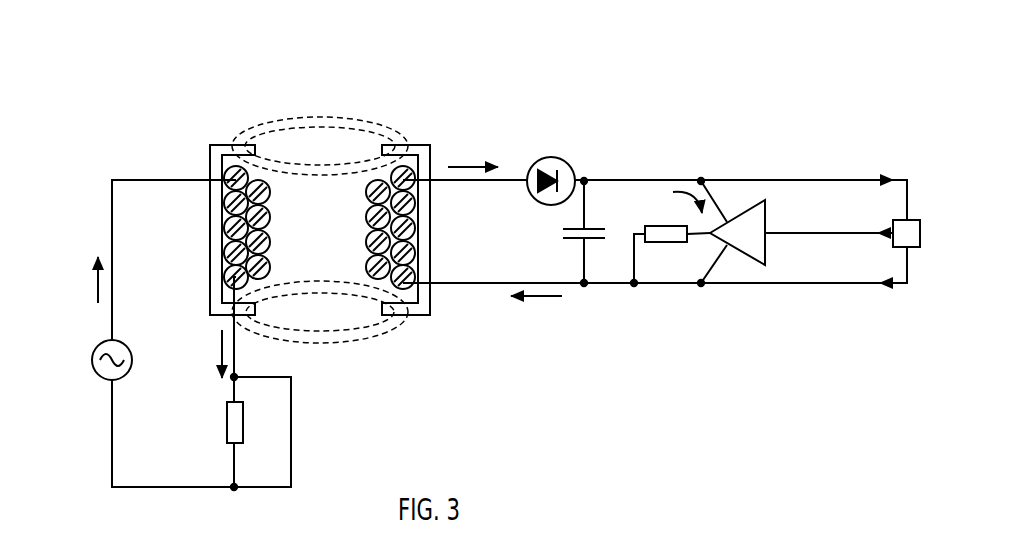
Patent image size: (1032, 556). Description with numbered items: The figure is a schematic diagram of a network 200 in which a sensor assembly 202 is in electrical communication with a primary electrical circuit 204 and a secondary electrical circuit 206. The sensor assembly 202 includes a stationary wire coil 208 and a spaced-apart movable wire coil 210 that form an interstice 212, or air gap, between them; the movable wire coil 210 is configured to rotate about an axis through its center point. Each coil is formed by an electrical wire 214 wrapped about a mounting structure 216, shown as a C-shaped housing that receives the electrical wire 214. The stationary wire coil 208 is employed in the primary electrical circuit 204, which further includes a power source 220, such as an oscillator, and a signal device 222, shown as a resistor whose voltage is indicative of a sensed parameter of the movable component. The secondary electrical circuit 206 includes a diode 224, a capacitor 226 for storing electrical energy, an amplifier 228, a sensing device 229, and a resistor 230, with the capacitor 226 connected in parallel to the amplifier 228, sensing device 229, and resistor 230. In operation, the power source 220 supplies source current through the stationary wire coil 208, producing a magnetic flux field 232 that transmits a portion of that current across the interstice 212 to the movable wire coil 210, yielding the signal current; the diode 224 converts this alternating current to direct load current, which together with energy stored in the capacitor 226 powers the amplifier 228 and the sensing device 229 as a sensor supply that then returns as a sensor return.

The network 200 is at (63, 58).
The sensor assembly 202 is at (427, 86).
The primary electrical circuit 204 is at (96, 166).
The secondary electrical circuit 206 is at (685, 127).
The stationary wire coil 208 is at (208, 163).
The movable wire coil 210 is at (432, 158).
The interstice 212 is at (378, 119).
The electrical wire 214 is at (270, 212).
The mounting structure 216 is at (210, 213).
The power source 220 is at (97, 375).
The signal device 222 is at (225, 412).
The diode 224 is at (569, 165).
The capacitor 226 is at (597, 229).
The amplifier 228 is at (743, 262).
The sensing device 229 is at (915, 218).
The resistor 230 is at (640, 232).
The magnetic flux field 232 is at (405, 132).